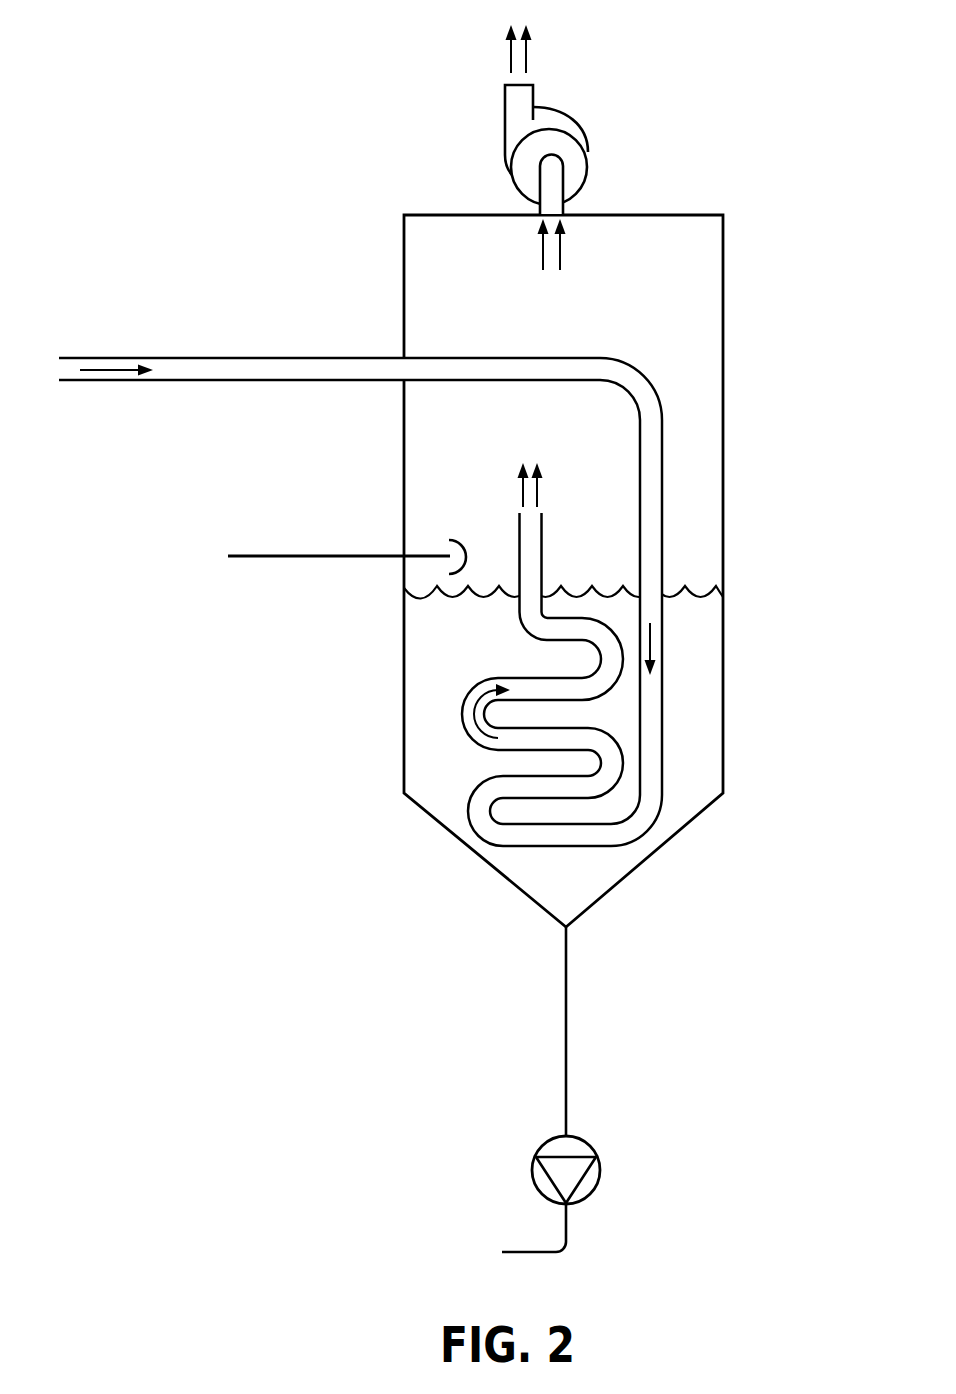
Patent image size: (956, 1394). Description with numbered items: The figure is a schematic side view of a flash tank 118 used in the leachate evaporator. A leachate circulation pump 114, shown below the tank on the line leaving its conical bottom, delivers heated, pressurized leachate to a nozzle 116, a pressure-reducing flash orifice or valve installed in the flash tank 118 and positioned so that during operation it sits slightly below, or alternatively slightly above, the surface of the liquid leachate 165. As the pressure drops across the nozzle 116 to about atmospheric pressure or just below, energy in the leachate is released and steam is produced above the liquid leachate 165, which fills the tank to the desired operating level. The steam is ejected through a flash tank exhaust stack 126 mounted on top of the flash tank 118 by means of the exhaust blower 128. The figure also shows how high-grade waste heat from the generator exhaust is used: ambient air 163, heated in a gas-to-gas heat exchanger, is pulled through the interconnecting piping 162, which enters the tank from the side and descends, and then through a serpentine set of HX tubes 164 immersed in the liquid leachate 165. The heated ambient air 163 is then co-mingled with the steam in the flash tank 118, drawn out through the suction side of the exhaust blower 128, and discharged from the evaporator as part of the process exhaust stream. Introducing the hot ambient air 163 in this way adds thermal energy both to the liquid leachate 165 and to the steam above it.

The leachate circulation pump 114 is at (592, 1142).
The nozzle 116 is at (467, 537).
The flash tank 118 is at (403, 262).
The flash tank exhaust stack 126 is at (535, 78).
The exhaust blower 128 is at (585, 150).
The interconnecting piping 162 is at (185, 355).
The ambient air 163 is at (107, 372).
The HX tubes 164 is at (462, 707).
The liquid leachate 165 is at (698, 728).